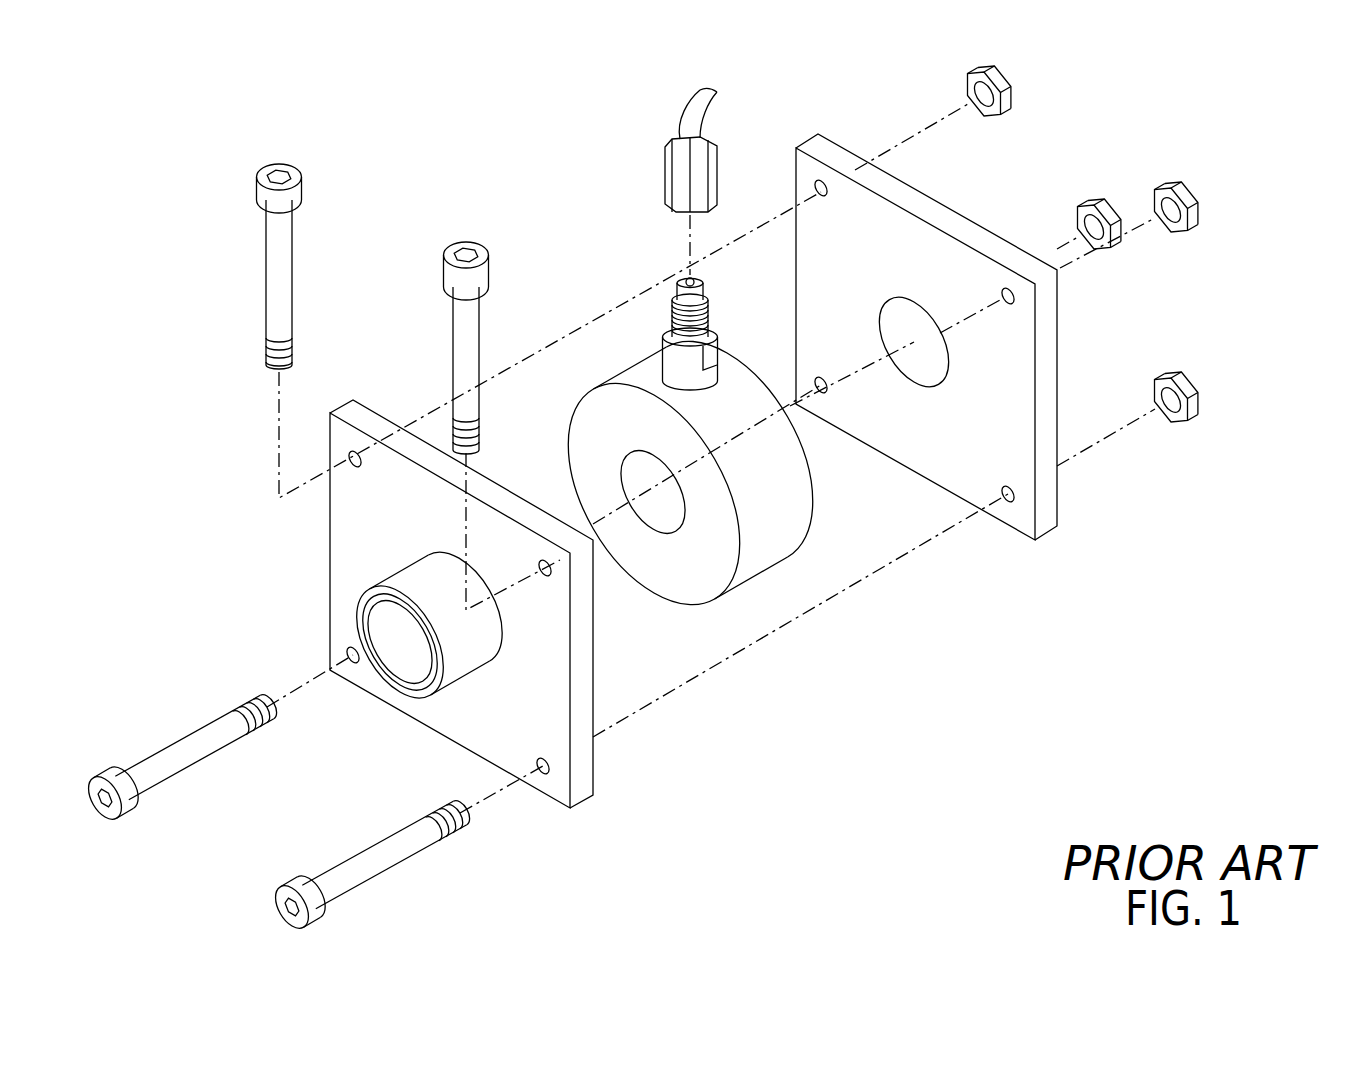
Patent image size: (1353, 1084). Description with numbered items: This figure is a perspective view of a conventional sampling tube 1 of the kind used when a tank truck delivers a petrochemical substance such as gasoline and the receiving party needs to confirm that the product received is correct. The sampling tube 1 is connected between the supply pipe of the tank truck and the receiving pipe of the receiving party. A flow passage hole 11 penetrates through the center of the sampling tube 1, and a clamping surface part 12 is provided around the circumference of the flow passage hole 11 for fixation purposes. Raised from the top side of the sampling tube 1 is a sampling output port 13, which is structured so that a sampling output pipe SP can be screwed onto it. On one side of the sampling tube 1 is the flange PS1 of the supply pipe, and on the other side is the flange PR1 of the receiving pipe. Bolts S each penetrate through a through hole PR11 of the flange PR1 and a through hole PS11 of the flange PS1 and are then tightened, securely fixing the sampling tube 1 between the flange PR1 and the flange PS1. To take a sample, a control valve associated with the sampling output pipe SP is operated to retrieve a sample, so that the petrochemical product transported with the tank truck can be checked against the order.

The sampling tube 1 is at (578, 266).
The flow passage hole 11 is at (670, 517).
The clamping surface part 12 is at (712, 553).
The sampling output port 13 is at (682, 300).
The sampling output pipe SP is at (678, 145).
The flange of the supply pipe PS1 is at (452, 702).
The through hole of the supply pipe flange PS11 is at (355, 450).
The flange of the receiving pipe PR1 is at (930, 214).
The through hole of the receiving pipe flange PR11 is at (815, 182).
The bolt S is at (277, 268).